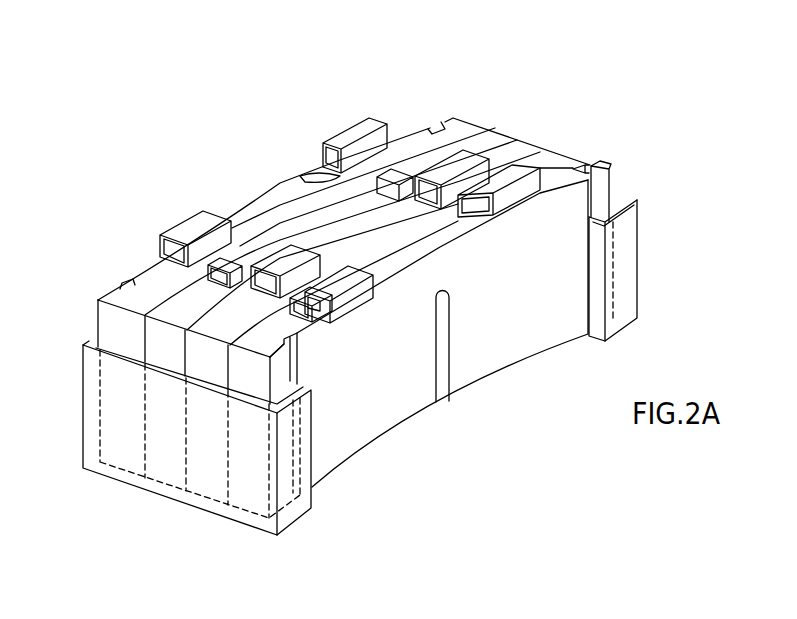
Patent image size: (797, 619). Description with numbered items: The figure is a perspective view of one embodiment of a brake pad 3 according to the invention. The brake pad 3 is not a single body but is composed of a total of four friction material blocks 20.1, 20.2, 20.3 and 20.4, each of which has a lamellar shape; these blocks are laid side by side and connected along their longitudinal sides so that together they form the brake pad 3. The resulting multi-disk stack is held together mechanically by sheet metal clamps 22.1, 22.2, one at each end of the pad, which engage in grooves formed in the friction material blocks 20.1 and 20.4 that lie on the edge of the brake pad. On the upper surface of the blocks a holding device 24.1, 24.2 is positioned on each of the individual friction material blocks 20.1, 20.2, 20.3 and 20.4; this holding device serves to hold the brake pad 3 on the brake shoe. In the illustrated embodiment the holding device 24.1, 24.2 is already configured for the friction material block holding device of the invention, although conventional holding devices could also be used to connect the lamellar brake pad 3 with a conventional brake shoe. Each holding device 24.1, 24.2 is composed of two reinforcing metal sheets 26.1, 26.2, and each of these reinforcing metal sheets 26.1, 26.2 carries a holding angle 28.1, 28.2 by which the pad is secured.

The brake pad 3 is at (459, 75).
The friction material block 20.1 is at (463, 130).
The friction material block 20.2 is at (505, 142).
The friction material block 20.3 is at (543, 153).
The friction material block 20.4 is at (593, 162).
The sheet metal clamp 22.1 is at (92, 398).
The sheet metal clamp 22.2 is at (627, 267).
The holding device 24.1 is at (333, 177).
The holding device 24.2 is at (513, 200).
The reinforcing metal sheet 26.1 is at (128, 281).
The reinforcing metal sheet 26.2 is at (183, 262).
The holding angle 28.1 is at (350, 290).
The holding angle 28.2 is at (263, 240).